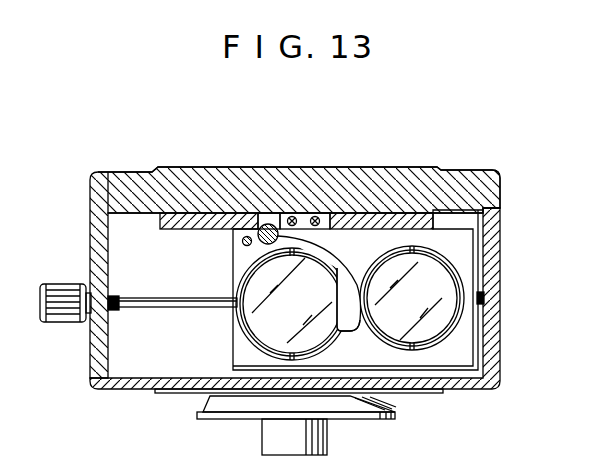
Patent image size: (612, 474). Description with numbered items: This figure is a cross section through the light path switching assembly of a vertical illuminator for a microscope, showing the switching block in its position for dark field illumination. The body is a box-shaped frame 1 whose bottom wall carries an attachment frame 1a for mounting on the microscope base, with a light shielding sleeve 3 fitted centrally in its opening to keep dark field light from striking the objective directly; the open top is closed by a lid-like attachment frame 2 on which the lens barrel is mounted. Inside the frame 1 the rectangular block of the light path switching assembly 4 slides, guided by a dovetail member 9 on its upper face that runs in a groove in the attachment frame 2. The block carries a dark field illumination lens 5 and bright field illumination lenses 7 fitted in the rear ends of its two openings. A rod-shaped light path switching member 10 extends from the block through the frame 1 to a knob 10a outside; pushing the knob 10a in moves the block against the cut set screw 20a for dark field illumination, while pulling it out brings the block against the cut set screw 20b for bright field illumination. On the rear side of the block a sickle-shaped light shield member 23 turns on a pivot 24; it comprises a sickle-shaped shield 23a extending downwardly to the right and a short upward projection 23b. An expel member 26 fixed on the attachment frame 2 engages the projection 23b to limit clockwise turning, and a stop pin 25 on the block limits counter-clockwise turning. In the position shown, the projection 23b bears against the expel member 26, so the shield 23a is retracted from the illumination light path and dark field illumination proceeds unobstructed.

The frame 1 is at (98, 253).
The attachment frame 1a is at (372, 416).
The attachment frame 2 is at (133, 182).
The light shielding sleeve 3 is at (264, 437).
The light path switching assembly 4 is at (463, 255).
The dark field illumination lens 5 is at (262, 325).
The bright field illumination lenses 7 is at (440, 328).
The dovetail member 9 is at (445, 220).
The light path switching member 10 is at (161, 307).
The knob 10a is at (58, 322).
The cut set screw 20a is at (483, 297).
The cut set screw 20b is at (114, 296).
The light shield member 23 is at (325, 237).
The sickle-shaped shield 23a is at (344, 300).
The projection 23b is at (265, 215).
The pivot 24 is at (273, 223).
The stop pin 25 is at (243, 241).
The expel member 26 is at (307, 213).